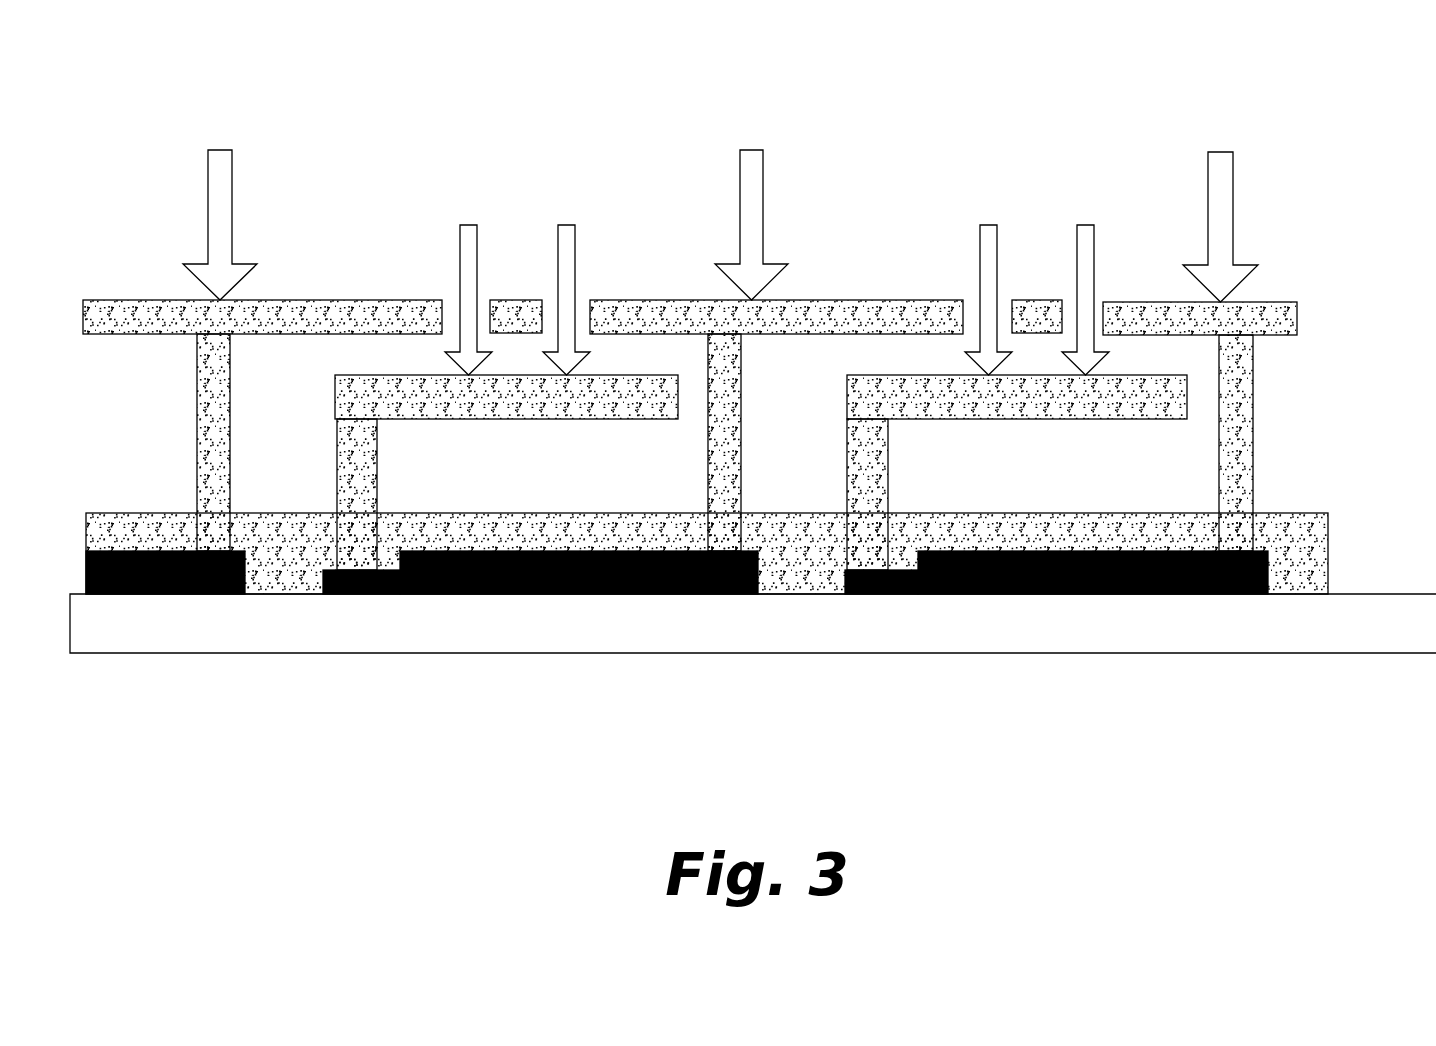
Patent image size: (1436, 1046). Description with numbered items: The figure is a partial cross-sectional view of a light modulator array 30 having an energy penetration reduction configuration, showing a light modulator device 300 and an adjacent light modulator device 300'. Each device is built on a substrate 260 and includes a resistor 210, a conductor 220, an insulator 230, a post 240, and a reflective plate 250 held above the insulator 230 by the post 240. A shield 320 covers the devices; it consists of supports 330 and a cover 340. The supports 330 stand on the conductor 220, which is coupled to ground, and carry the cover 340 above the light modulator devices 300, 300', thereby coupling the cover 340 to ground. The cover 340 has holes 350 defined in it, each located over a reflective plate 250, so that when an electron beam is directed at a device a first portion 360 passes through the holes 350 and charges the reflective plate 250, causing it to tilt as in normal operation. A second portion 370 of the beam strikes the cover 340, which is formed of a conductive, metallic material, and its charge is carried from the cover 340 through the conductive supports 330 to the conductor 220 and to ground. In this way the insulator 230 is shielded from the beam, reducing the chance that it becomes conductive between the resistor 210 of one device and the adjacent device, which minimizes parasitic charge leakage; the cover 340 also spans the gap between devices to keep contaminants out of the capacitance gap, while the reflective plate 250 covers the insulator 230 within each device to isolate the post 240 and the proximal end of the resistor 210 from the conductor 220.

The light modulator array 30 is at (1000, 78).
The adjacent light modulator device 300' is at (516, 732).
The light modulator device 300 is at (1069, 750).
The resistor 210 is at (362, 594).
The conductor 220 is at (585, 595).
The insulator 230 is at (263, 577).
The post 240 is at (337, 455).
The reflective plate 250 is at (552, 419).
The substrate 260 is at (820, 634).
The shield 320 is at (1302, 305).
The supports 330 is at (197, 422).
The cover 340 is at (293, 331).
The holes 350 is at (449, 293).
The first portion of electron beam 360 is at (582, 270).
The second portion of electron beam 370 is at (238, 203).